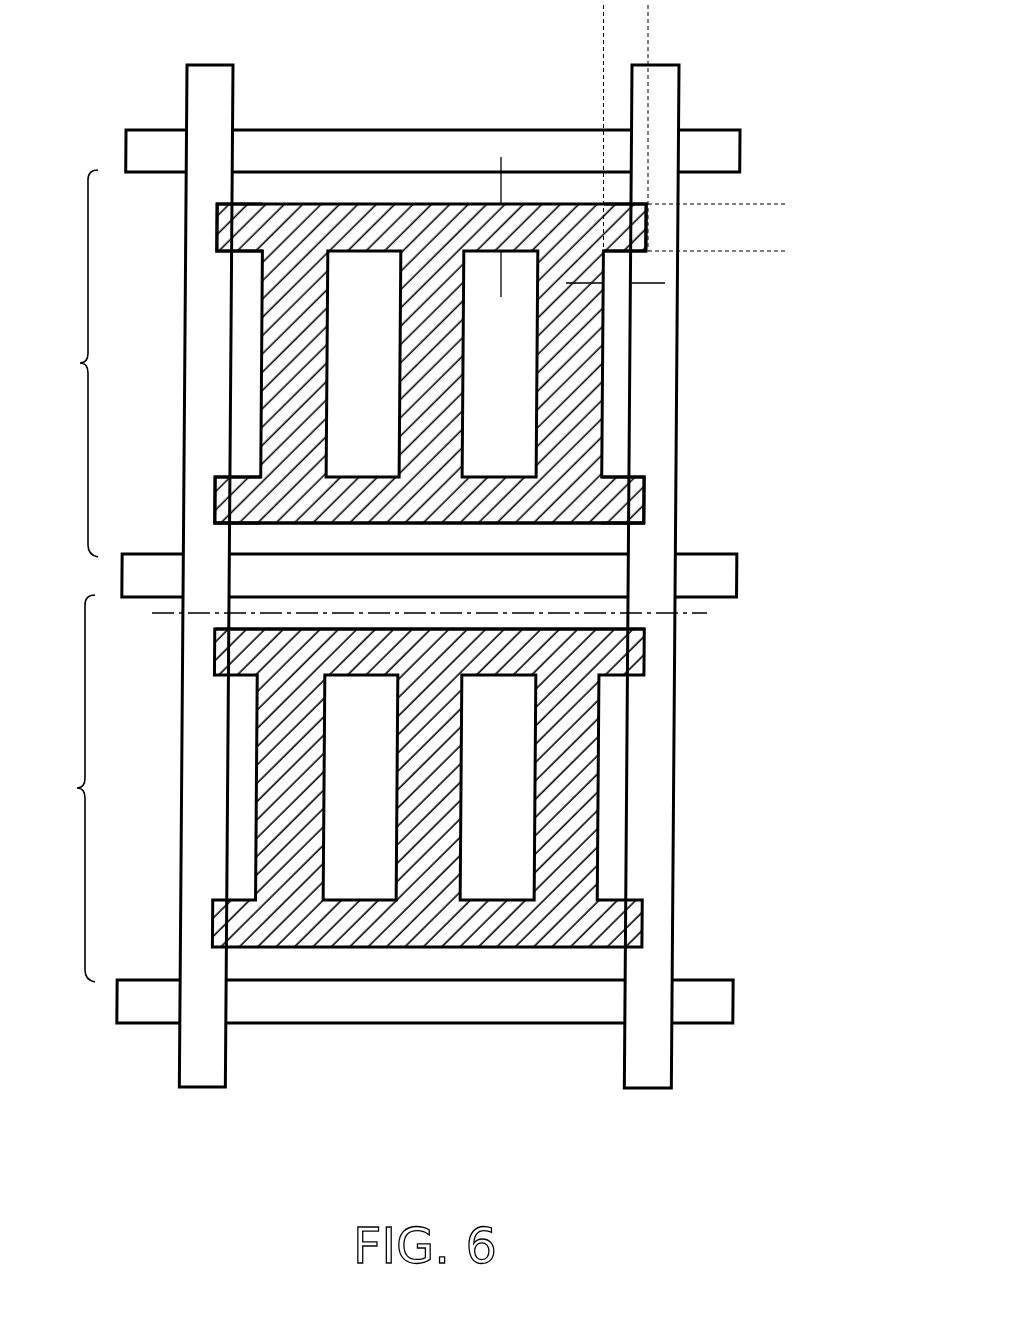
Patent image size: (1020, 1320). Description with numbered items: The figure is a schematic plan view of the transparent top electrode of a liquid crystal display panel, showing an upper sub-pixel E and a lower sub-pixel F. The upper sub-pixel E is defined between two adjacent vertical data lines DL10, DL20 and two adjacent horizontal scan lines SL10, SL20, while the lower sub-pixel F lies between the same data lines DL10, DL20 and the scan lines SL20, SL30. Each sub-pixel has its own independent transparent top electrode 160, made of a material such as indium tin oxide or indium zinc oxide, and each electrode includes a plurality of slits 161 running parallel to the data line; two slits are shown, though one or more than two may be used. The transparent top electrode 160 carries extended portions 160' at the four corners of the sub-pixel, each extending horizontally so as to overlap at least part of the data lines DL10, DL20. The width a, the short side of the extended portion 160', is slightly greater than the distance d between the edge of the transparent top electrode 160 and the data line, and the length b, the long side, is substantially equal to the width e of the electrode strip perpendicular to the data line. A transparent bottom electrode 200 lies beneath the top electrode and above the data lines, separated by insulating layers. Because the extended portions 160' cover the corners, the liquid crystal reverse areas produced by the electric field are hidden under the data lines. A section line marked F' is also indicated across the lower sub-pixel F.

The transparent top electrode 160 is at (485, 575).
The extended portion 160' is at (435, 363).
The slit 161 is at (520, 397).
The transparent bottom electrode 200 is at (612, 540).
The scan line SL10 is at (748, 152).
The scan line SL20 is at (745, 577).
The scan line SL30 is at (742, 1001).
The data line DL10 is at (201, 1095).
The data line DL20 is at (649, 1095).
The width of the extended portion a is at (648, 15).
The length of the extended portion b is at (779, 204).
The distance between the edge of the transparent top electrode and the data line d is at (615, 282).
The width of the strip of the transparent top electrode e is at (501, 227).
The upper sub-pixel E is at (78, 363).
The lower sub-pixel F is at (74, 788).
The section line F'-F'' F' is at (431, 613).